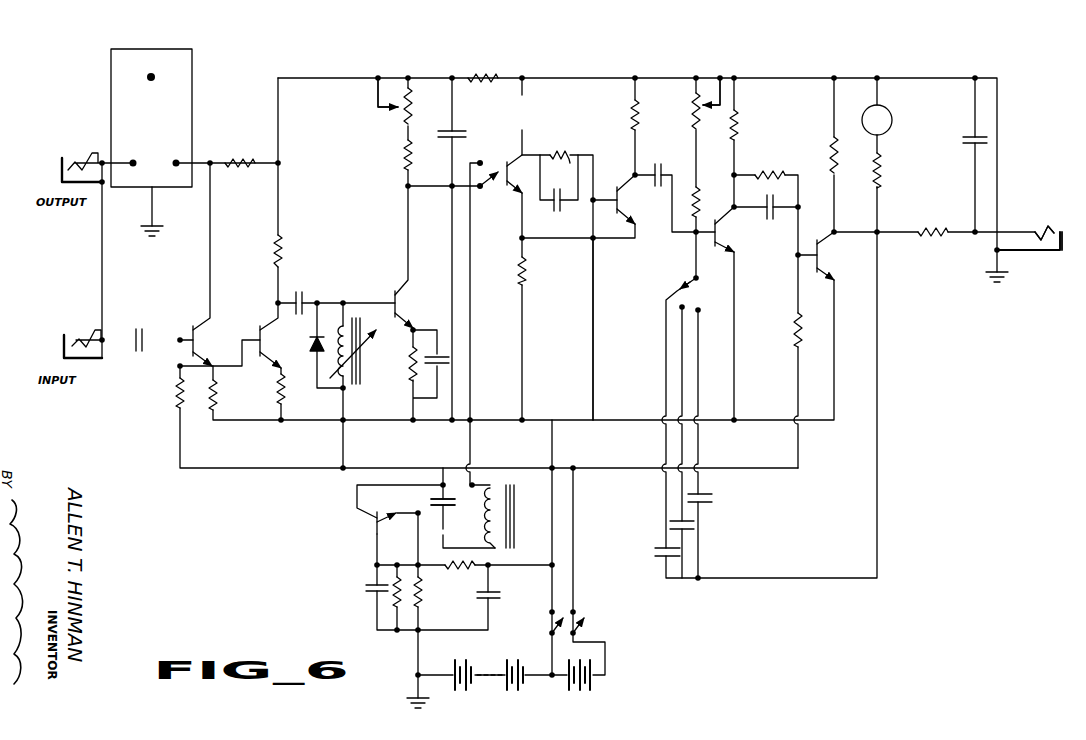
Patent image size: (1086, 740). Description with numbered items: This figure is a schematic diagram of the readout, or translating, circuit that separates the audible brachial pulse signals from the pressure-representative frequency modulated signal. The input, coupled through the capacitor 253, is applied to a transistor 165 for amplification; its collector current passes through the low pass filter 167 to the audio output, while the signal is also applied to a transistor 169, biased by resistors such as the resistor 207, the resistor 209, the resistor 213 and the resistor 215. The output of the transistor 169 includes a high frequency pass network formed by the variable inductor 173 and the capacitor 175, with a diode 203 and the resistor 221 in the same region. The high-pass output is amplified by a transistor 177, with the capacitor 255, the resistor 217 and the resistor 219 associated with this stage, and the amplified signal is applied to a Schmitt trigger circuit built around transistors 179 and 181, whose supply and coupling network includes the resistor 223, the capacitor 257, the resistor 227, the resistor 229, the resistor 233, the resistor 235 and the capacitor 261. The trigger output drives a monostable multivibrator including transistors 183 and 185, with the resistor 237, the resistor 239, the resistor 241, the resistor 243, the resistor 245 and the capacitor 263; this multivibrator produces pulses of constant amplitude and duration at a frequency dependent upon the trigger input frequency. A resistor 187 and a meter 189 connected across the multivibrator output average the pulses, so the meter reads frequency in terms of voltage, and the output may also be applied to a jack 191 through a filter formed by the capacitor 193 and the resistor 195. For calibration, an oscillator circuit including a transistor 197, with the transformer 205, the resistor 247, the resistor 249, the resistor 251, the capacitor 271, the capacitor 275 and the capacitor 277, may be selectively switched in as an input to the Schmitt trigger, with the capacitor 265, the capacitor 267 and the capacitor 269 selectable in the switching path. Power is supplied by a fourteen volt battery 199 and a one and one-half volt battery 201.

The transistor 165 is at (194, 324).
The low pass filter 167 is at (192, 67).
The transistor 169 is at (258, 328).
The inductor 173 is at (356, 340).
The capacitor 175 is at (300, 288).
The transistor 177 is at (392, 292).
The transistor 179 is at (500, 190).
The transistor 181 is at (612, 192).
The transistor 183 is at (718, 240).
The transistor 185 is at (824, 260).
The resistor 187 is at (884, 172).
The meter 189 is at (892, 110).
The jack 191 is at (1040, 230).
The capacitor 193 is at (970, 134).
The resistor 195 is at (938, 238).
The transistor 197 is at (370, 535).
The battery 199 is at (520, 690).
The battery 201 is at (580, 690).
The diode 203 is at (320, 328).
The transformer 205 is at (515, 510).
The resistor 207 is at (176, 398).
The resistor 209 is at (218, 390).
The resistor 213 is at (272, 248).
The resistor 215 is at (238, 158).
The resistor 217 is at (399, 114).
The resistor 219 is at (400, 158).
The resistor 221 is at (408, 375).
The resistor 223 is at (485, 74).
The resistor 227 is at (560, 150).
The resistor 229 is at (516, 276).
The resistor 233 is at (641, 118).
The resistor 235 is at (692, 108).
The resistor 237 is at (704, 192).
The resistor 239 is at (739, 128).
The resistor 241 is at (769, 173).
The resistor 243 is at (792, 330).
The resistor 245 is at (824, 147).
The resistor 247 is at (392, 600).
The resistor 249 is at (424, 596).
The resistor 251 is at (472, 572).
The capacitor 253 is at (152, 323).
The capacitor 255 is at (440, 350).
The capacitor 257 is at (456, 130).
The capacitor 261 is at (668, 148).
The capacitor 263 is at (768, 224).
The capacitor 265 is at (658, 550).
The capacitor 267 is at (694, 522).
The capacitor 269 is at (712, 498).
The capacitor 271 is at (450, 482).
The capacitor 275 is at (364, 590).
The capacitor 277 is at (496, 596).